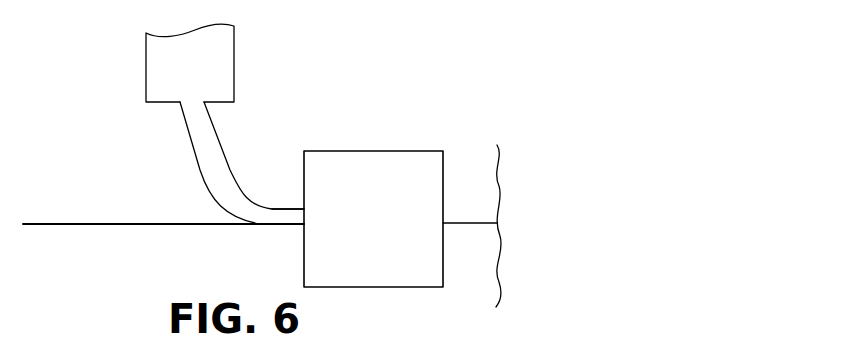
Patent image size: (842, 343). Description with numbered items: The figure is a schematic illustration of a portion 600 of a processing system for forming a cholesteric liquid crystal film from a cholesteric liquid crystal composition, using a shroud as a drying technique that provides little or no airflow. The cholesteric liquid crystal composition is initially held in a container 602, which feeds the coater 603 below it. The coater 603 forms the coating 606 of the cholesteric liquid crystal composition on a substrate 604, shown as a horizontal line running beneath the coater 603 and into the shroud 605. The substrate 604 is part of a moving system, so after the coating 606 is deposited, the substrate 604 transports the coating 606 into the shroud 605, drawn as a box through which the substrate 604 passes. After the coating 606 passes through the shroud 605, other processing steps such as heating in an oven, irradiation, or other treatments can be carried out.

The portion of a processing system 600 is at (345, 98).
The container 602 is at (165, 68).
The coater 603 is at (198, 163).
The substrate 604 is at (127, 227).
The shroud 605 is at (380, 287).
The coating 606 is at (268, 208).